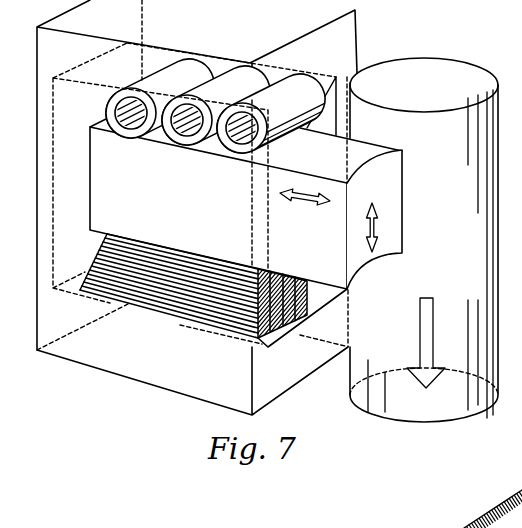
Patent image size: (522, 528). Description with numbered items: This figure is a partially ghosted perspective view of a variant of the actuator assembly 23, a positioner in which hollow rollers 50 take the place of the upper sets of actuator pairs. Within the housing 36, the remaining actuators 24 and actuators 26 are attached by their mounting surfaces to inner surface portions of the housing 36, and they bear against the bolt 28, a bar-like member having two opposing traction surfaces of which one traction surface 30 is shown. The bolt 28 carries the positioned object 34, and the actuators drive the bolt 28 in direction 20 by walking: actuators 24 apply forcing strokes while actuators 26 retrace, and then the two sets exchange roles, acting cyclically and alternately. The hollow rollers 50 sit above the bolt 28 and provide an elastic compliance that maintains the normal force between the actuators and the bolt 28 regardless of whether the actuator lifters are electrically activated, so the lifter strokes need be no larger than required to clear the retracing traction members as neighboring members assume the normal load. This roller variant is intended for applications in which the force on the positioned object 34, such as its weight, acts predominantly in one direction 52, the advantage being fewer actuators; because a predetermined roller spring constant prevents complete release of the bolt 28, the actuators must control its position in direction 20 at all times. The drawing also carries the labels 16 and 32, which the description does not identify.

The vertical movement arrow 16 is at (377, 229).
The direction 20 is at (303, 200).
The actuator assembly 23 is at (112, 400).
The actuators 24 is at (242, 340).
The actuators 26 is at (308, 321).
The bolt 28 is at (100, 206).
The traction surface 30 is at (297, 154).
The curved panel 32 is at (389, 183).
The positioned object 34 is at (426, 72).
The housing 36 is at (358, 52).
The hollow rollers 50 is at (188, 70).
The direction 52 is at (433, 346).